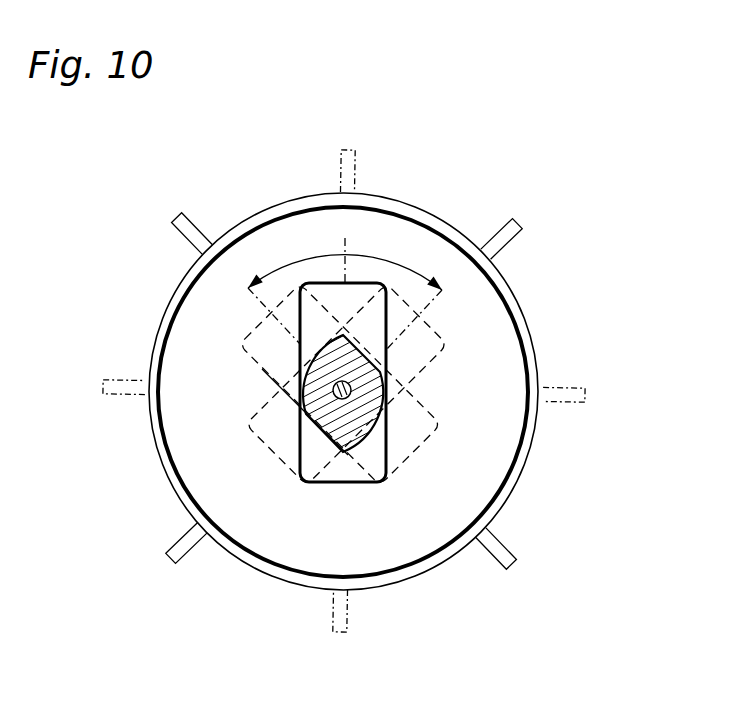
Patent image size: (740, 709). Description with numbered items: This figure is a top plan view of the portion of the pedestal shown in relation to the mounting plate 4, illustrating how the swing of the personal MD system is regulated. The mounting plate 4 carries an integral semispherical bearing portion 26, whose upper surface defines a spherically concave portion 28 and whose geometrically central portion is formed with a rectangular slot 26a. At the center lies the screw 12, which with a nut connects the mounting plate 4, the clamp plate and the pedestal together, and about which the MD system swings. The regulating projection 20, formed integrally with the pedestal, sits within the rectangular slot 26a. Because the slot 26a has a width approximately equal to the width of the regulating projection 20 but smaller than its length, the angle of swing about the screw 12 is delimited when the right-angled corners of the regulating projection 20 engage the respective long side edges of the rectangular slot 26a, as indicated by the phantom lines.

The mounting plate 4 is at (474, 194).
The screw 12 is at (299, 380).
The regulating projection 20 is at (370, 393).
The bearing portion 26 is at (517, 473).
The rectangular slot 26a is at (338, 470).
The spherically concave portion 28 is at (495, 362).